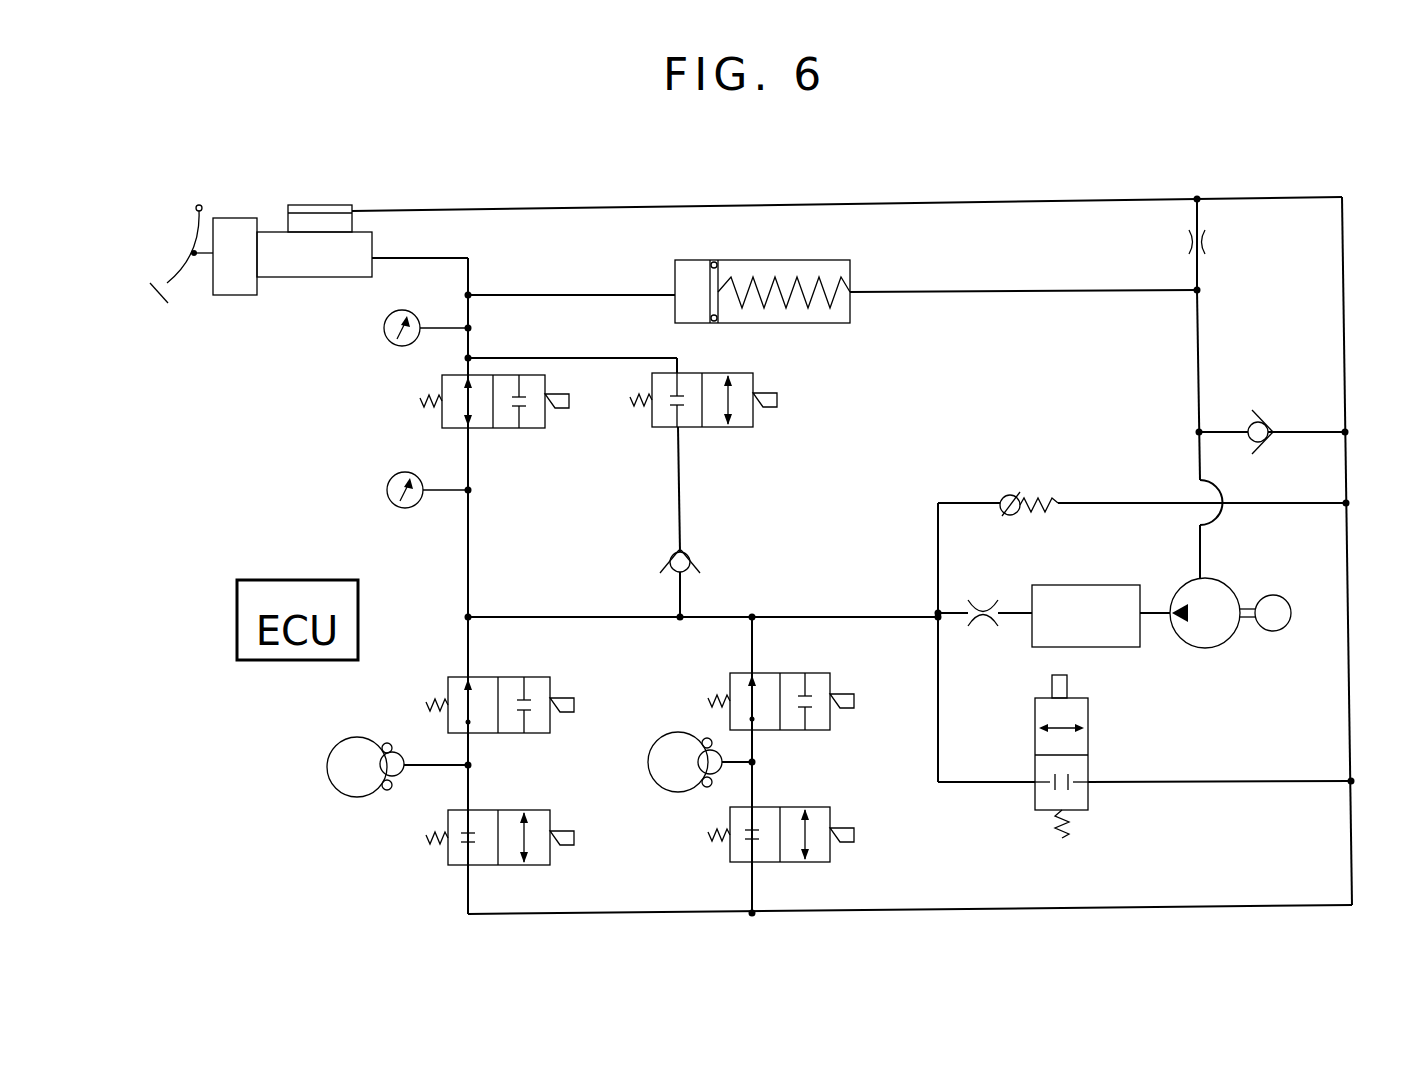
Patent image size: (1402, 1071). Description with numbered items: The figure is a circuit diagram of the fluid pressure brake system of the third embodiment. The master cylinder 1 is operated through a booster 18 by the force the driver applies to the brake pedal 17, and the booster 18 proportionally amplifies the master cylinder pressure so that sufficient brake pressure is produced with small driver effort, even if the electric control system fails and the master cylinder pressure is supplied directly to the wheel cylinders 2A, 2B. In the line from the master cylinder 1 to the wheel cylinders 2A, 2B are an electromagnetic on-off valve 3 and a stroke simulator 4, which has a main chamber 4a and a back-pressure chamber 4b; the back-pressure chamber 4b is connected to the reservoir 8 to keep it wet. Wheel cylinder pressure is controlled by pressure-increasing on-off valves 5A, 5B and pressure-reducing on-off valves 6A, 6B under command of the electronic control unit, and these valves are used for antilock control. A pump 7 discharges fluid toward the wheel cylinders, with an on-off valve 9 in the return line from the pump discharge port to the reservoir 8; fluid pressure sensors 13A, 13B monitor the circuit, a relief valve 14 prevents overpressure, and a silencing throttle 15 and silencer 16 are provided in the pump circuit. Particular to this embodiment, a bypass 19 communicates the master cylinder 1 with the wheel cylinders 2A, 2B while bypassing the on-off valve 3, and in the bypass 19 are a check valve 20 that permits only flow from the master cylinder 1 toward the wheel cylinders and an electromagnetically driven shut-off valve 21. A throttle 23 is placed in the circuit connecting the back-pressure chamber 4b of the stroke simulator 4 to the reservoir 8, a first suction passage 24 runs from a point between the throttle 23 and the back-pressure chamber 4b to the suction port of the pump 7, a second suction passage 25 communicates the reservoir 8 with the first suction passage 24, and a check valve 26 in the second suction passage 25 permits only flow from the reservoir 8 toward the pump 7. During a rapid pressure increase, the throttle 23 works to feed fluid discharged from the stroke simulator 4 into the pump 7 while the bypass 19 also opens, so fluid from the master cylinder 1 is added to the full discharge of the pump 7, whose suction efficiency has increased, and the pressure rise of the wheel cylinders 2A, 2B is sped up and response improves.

The master cylinder 1 is at (303, 262).
The wheel cylinder 2A is at (348, 788).
The wheel cylinder 2B is at (672, 787).
The electromagnetic on-off valve 3 is at (503, 427).
The stroke simulator 4 is at (748, 297).
The main chamber 4a is at (687, 277).
The back-pressure chamber 4b is at (800, 317).
The pressure-increasing on-off valve 5A is at (517, 678).
The pressure-increasing on-off valve 5B is at (813, 672).
The pressure-reducing on-off valve 6A is at (513, 808).
The pressure-reducing on-off valve 6B is at (818, 807).
The pump 7 is at (1213, 587).
The reservoir 8 is at (328, 212).
The on-off valve 9 is at (1090, 740).
The fluid pressure sensor 13A is at (387, 340).
The fluid pressure sensor 13B is at (390, 503).
The relief valve 14 is at (1032, 495).
The silencing throttle 15 is at (985, 602).
The silencer 16 is at (1088, 600).
The brake pedal 17 is at (172, 277).
The booster 18 is at (230, 287).
The bypass 19 is at (683, 507).
The check valve 20 is at (695, 562).
The shut-off valve 21 is at (745, 427).
The throttle 23 is at (1217, 242).
The first suction passage 24 is at (1202, 353).
The second suction passage 25 is at (1305, 433).
The check valve 26 is at (1263, 412).